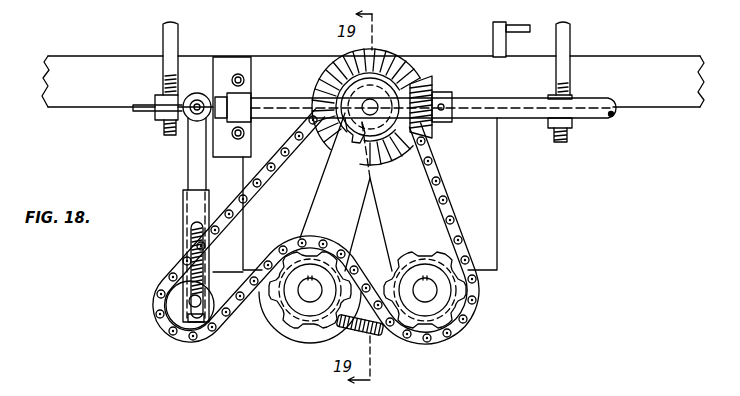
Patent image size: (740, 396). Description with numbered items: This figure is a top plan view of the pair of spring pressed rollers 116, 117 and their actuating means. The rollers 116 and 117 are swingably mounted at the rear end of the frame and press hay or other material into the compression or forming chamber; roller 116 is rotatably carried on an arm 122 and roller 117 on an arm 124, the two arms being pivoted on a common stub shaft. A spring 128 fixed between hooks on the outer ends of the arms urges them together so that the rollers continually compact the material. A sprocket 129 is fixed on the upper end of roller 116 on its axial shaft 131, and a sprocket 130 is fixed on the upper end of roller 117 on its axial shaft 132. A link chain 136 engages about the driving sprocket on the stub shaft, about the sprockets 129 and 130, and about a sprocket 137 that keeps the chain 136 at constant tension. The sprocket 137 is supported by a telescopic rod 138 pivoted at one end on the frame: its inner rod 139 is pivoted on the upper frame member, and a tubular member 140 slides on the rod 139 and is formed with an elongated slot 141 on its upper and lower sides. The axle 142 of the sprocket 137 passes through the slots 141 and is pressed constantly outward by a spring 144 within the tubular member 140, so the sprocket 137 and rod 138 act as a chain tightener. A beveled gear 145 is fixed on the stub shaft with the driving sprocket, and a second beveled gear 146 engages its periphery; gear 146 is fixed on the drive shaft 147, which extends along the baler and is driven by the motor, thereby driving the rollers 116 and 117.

The spring pressed roller 116 is at (440, 347).
The spring pressed roller 117 is at (300, 343).
The arm 122 is at (413, 202).
The arm 124 is at (350, 225).
The spring 128 is at (380, 337).
The sprocket 129 is at (422, 252).
The sprocket 130 is at (305, 292).
The axial shaft 131 is at (435, 290).
The axial shaft 132 is at (292, 313).
The link chain 136 is at (253, 188).
The sprocket 137 is at (213, 337).
The telescopic rod 138 is at (182, 167).
The inner rod 139 is at (200, 183).
The tubular member 140 is at (197, 95).
The elongated slot 141 is at (187, 260).
The axle 142 is at (177, 308).
The spring 144 is at (202, 262).
The beveled gear 145 is at (378, 58).
The beveled gear 146 is at (428, 77).
The drive shaft 147 is at (523, 113).